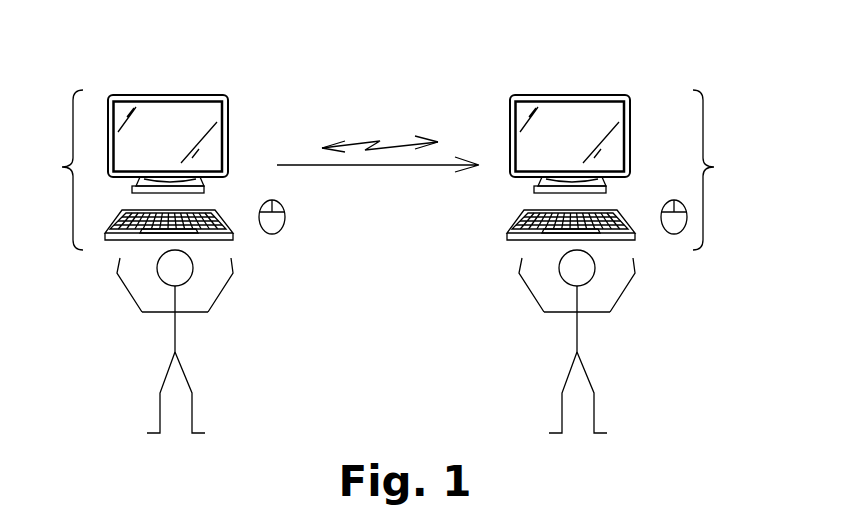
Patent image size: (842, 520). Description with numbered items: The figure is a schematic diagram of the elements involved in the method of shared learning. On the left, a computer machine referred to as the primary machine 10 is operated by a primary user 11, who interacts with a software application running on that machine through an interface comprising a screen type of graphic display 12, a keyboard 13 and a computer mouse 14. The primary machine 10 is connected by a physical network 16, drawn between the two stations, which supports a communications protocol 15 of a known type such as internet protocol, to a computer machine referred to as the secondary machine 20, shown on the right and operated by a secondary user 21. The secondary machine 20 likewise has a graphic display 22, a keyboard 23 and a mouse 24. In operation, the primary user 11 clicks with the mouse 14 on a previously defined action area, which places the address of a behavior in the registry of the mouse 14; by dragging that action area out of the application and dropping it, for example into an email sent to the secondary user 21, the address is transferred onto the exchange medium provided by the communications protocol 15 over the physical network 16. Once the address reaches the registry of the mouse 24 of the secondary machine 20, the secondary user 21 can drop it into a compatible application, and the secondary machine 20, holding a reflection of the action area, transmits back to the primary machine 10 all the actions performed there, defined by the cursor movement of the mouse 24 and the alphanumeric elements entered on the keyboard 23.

The primary machine 10 is at (56, 170).
The primary user 11 is at (148, 354).
The graphic display 12 is at (167, 95).
The keyboard 13 is at (233, 237).
The computer mouse 14 is at (275, 232).
The communications protocol 15 is at (407, 166).
The physical network 16 is at (381, 115).
The secondary machine 20 is at (721, 170).
The secondary user 21 is at (596, 349).
The graphic display 22 is at (569, 95).
The keyboard 23 is at (508, 235).
The mouse 24 is at (674, 234).